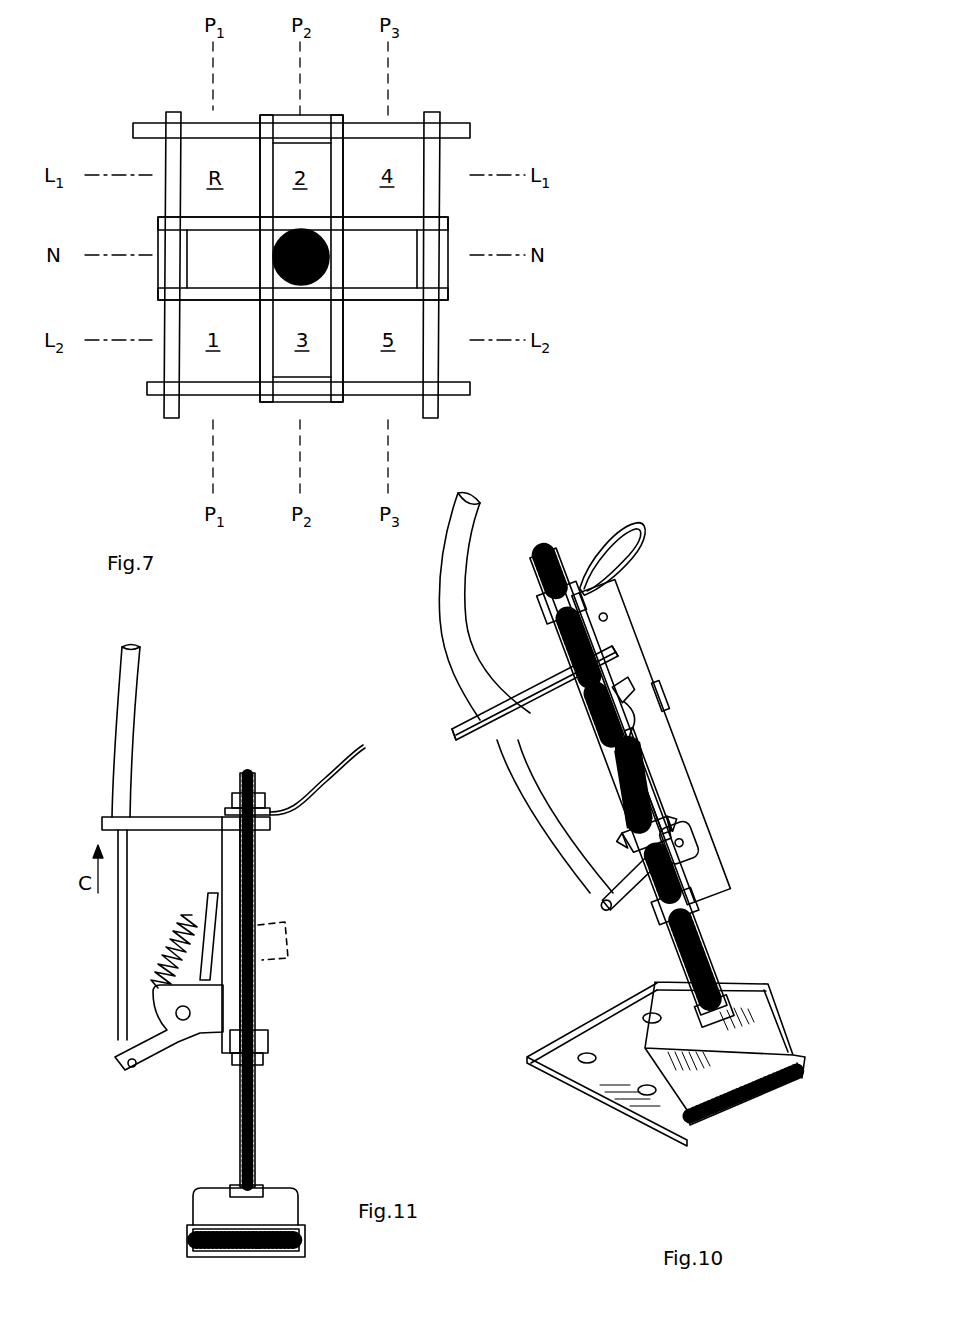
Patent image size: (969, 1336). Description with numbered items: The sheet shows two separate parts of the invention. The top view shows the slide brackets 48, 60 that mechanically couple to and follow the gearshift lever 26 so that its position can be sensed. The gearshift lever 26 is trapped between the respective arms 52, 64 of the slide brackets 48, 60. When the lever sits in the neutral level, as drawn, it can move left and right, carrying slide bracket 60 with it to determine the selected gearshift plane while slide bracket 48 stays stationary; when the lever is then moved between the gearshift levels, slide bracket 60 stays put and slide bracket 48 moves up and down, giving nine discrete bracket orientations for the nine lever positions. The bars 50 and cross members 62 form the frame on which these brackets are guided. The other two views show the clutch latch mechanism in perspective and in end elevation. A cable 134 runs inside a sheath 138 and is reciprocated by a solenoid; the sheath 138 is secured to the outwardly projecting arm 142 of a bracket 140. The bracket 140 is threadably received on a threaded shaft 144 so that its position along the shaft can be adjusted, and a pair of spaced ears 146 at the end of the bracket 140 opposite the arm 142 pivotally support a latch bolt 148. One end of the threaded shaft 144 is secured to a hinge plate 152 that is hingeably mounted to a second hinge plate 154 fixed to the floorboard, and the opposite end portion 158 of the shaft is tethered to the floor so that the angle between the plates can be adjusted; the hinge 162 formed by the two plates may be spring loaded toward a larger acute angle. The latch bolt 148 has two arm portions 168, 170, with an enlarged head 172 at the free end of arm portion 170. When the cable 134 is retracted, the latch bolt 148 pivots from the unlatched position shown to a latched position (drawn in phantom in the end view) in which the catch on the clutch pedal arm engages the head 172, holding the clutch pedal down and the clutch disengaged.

In FIG. 7, the gearshift lever 26 is at (322, 262).
In FIG. 7, the slide bracket 48 is at (410, 300).
In FIG. 7, the vertical bar 50 is at (165, 353).
In FIG. 7, the arm 52 is at (405, 220).
In FIG. 7, the slide bracket 60 is at (262, 158).
In FIG. 7, the cross member 62 is at (407, 127).
In FIG. 7, the arm 64 is at (343, 163).
In FIG. 11, the cable 134 is at (118, 940).
In FIG. 10, the cable 134 is at (538, 810).
In FIG. 11, the sheath 138 is at (118, 723).
In FIG. 10, the sheath 138 is at (452, 633).
In FIG. 11, the bracket 140 is at (232, 845).
In FIG. 10, the bracket 140 is at (612, 617).
In FIG. 11, the outwardly projecting arm 142 is at (155, 820).
In FIG. 10, the outwardly projecting arm 142 is at (450, 678).
In FIG. 11, the threaded shaft 144 is at (255, 1137).
In FIG. 10, the threaded shaft 144 is at (713, 950).
In FIG. 11, the ear 146 is at (203, 1023).
In FIG. 10, the ear 146 is at (690, 838).
In FIG. 11, the latch bolt 148 is at (218, 910).
In FIG. 10, the latch bolt 148 is at (656, 798).
In FIG. 11, the hinge plate 152 is at (210, 1210).
In FIG. 10, the hinge plate 152 is at (760, 1020).
In FIG. 11, the hinge plate 154 is at (277, 1250).
In FIG. 10, the hinge plate 154 is at (600, 1090).
In FIG. 11, the opposite end portion 158 is at (250, 773).
In FIG. 10, the opposite end portion 158 is at (550, 550).
In FIG. 11, the hinge 162 is at (165, 1258).
In FIG. 10, the hinge 162 is at (763, 1120).
In FIG. 11, the arm portion 168 is at (162, 1047).
In FIG. 11, the arm portion 170 is at (223, 982).
In FIG. 10, the arm portion 170 is at (648, 763).
In FIG. 11, the enlarged head 172 is at (273, 942).
In FIG. 10, the enlarged head 172 is at (662, 690).